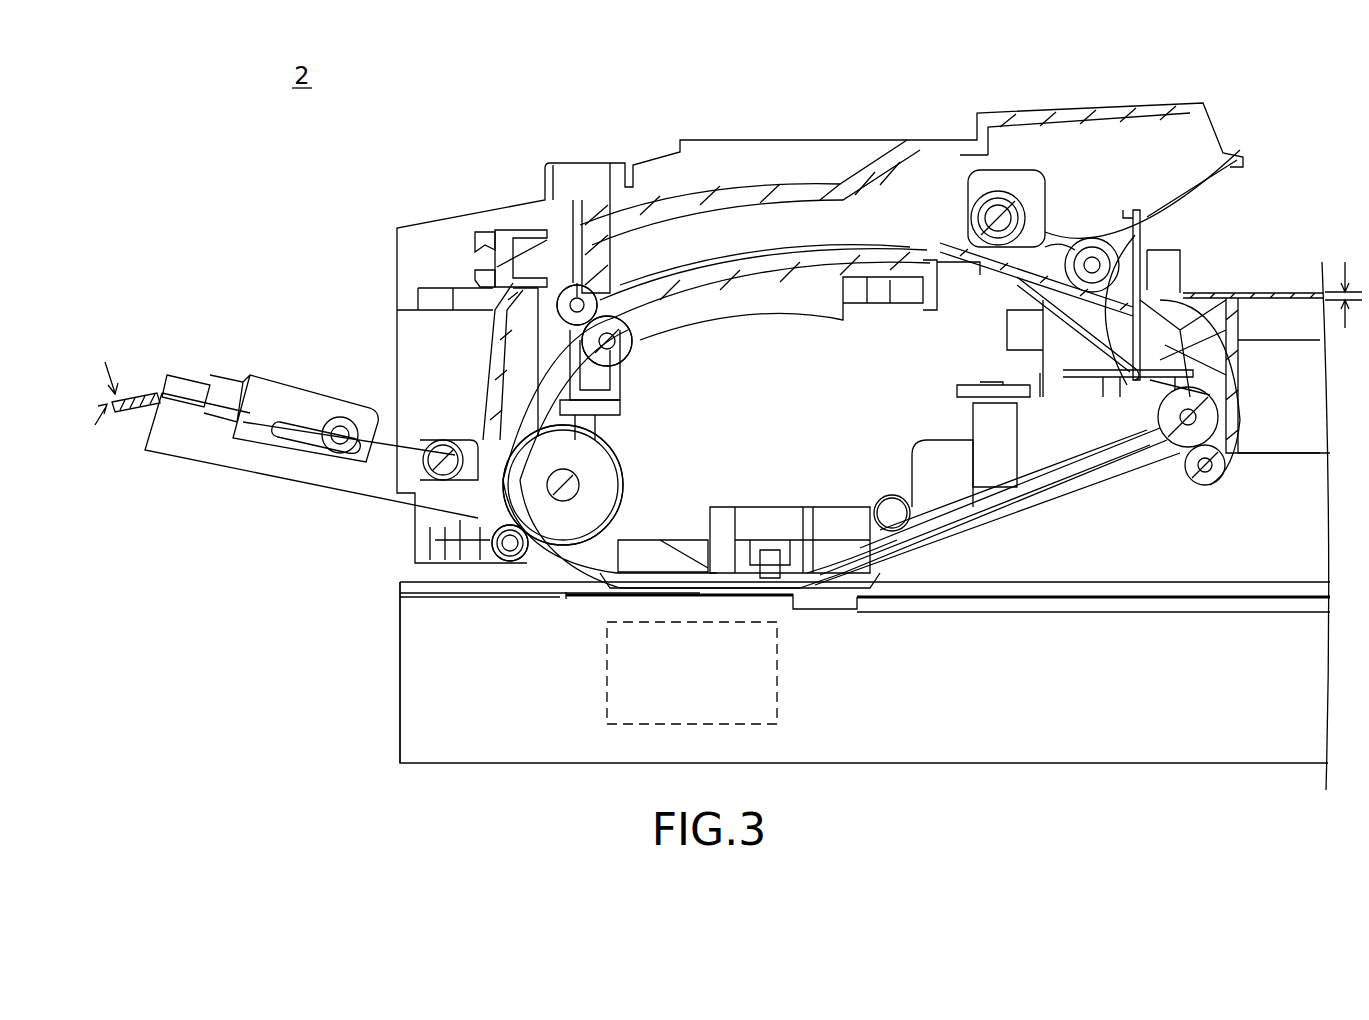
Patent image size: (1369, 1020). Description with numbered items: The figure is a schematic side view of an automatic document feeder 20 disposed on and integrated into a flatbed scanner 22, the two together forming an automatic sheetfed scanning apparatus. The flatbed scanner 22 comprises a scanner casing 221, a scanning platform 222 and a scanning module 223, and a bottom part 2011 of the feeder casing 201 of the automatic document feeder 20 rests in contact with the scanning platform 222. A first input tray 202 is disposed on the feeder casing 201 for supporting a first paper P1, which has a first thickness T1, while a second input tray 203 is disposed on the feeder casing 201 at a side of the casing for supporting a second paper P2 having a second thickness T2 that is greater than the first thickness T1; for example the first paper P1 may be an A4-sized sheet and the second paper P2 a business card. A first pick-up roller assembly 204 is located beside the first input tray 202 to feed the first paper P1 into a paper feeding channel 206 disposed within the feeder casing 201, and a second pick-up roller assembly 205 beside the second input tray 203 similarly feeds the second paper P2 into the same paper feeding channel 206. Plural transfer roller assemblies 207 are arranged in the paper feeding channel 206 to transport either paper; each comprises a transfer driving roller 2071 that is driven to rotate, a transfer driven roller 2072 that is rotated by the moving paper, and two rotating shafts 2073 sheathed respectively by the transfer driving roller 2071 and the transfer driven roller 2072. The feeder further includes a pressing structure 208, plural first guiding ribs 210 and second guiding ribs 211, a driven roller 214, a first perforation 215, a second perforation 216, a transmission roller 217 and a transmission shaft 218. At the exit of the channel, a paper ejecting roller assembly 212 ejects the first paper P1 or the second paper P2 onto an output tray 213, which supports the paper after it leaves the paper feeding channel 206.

The automatic document feeder 20 is at (378, 295).
The flatbed scanner 22 is at (378, 653).
The feeder casing 201 is at (805, 158).
The bottom part 2011 is at (727, 545).
The first input tray 202 is at (1253, 328).
The second input tray 203 is at (230, 450).
The first pick-up roller assembly 204 is at (997, 220).
The second pick-up roller assembly 205 is at (410, 457).
The paper feeding channel 206 is at (790, 250).
The transfer roller assemblies 207 is at (400, 105).
The transfer driving roller 2071 is at (577, 303).
The transfer driven roller 2072 is at (575, 293).
The rotating shafts 2073 is at (600, 330).
The pressing structure 208 is at (837, 603).
The first guiding ribs 210 is at (897, 555).
The second guiding ribs 211 is at (840, 598).
The paper ejecting roller assembly 212 is at (1160, 440).
The output tray 213 is at (1258, 480).
The driven roller 214 is at (735, 530).
The first perforation 215 is at (803, 607).
The second perforation 216 is at (895, 512).
The transmission roller 217 is at (890, 493).
The transmission shaft 218 is at (918, 512).
The scanner casing 221 is at (420, 740).
The scanning platform 222 is at (747, 600).
The scanning module 223 is at (767, 693).
The first paper P1 is at (1247, 287).
The first thickness T1 is at (1347, 308).
The second paper P2 is at (130, 407).
The second thickness T2 is at (86, 393).